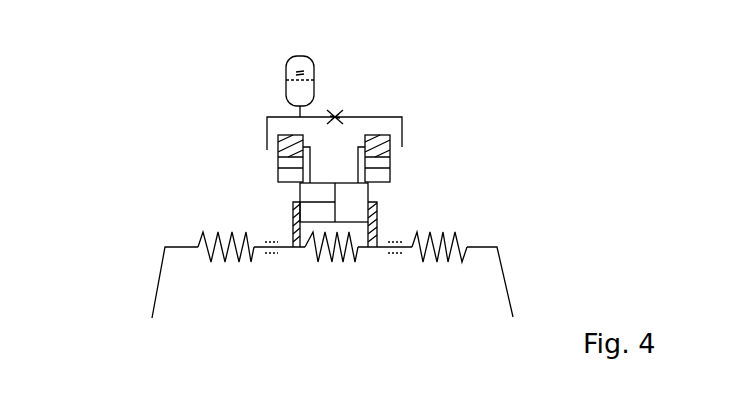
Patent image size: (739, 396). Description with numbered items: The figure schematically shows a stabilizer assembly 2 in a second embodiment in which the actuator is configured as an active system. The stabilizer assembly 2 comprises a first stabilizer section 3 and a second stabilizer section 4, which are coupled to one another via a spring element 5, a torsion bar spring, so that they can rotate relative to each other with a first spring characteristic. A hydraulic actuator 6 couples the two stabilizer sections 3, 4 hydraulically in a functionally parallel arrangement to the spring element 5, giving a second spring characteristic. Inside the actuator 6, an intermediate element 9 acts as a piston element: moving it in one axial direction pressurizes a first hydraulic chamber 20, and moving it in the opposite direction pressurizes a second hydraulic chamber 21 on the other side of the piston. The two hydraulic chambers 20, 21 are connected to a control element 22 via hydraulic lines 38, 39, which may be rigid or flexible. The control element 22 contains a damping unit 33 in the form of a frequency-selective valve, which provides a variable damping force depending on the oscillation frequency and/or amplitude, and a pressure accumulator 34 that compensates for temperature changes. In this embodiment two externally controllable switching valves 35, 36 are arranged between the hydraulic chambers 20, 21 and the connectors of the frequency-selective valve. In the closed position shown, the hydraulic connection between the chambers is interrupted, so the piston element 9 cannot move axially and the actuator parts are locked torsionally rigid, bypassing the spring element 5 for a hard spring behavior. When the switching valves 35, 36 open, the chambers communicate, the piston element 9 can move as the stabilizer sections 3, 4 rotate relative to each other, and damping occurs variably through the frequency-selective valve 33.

The stabilizer assembly 2 is at (122, 123).
The first stabilizer section 3 is at (453, 240).
The second stabilizer section 4 is at (193, 243).
The spring element 5 is at (331, 263).
The hydraulic actuator 6 is at (368, 192).
The intermediate element 9 is at (332, 197).
The first hydraulic chamber 20 is at (357, 212).
The second hydraulic chamber 21 is at (312, 214).
The control element 22 is at (410, 87).
The damping unit 33 is at (336, 110).
The pressure accumulator 34 is at (284, 72).
The switching valve 35 is at (390, 155).
The switching valve 36 is at (278, 160).
The hydraulic line 38 is at (377, 218).
The hydraulic line 39 is at (297, 228).